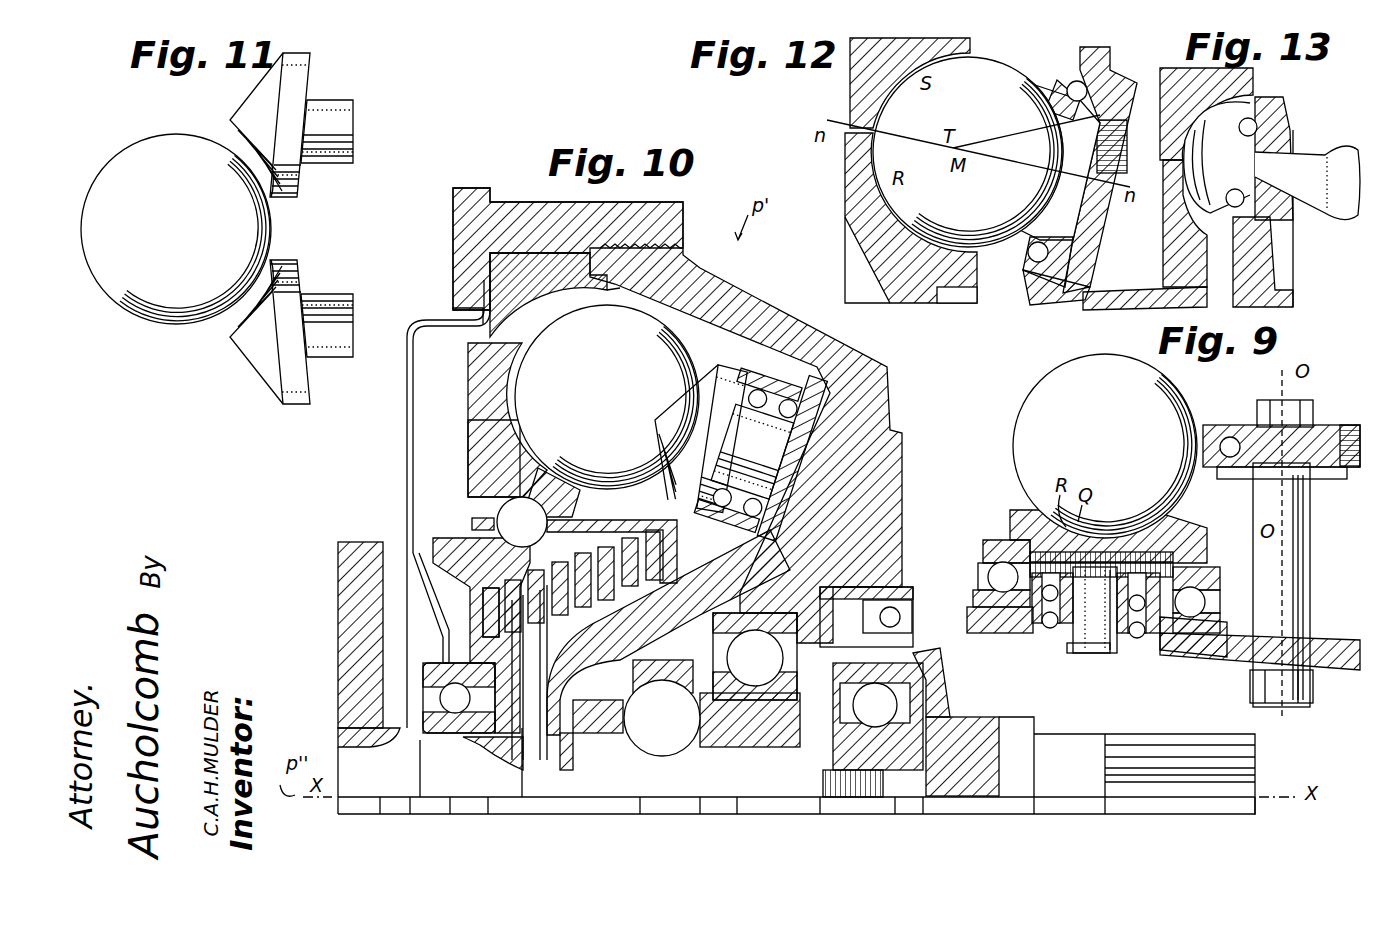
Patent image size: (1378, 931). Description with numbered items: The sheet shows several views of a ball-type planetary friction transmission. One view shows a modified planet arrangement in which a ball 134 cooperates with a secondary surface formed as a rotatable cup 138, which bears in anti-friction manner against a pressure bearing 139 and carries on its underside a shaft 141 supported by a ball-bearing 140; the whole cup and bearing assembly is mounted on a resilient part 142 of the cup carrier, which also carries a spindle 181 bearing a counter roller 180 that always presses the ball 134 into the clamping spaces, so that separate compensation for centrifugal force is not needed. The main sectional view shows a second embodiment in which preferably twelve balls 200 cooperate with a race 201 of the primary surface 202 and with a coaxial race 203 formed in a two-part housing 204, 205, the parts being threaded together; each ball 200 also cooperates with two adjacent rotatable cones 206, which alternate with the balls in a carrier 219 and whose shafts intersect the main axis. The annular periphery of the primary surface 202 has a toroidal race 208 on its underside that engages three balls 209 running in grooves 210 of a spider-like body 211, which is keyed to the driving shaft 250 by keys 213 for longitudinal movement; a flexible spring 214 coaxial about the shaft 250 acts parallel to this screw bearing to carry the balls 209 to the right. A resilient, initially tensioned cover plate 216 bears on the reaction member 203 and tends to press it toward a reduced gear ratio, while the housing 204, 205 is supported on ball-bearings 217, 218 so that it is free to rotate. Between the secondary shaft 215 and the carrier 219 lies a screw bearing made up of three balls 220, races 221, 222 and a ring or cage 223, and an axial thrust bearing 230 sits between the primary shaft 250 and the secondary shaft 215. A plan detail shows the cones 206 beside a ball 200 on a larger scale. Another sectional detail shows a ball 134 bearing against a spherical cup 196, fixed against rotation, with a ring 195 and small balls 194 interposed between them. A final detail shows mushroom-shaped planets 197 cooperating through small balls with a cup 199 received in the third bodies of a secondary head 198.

In FIG. 12, the ball 134 is at (993, 75).
In FIG. 9, the ball 134 is at (1033, 386).
In FIG. 9, the cup 138 is at (1013, 515).
In FIG. 9, the pressure bearing 139 is at (983, 548).
In FIG. 9, the ball-bearing 140 is at (1033, 638).
In FIG. 9, the shaft 141 is at (1125, 653).
In FIG. 9, the resilient part 142 is at (1335, 640).
In FIG. 9, the counter roller 180 is at (1322, 437).
In FIG. 9, the spindle 181 is at (1305, 558).
In FIG. 12, the small balls 194 is at (1105, 68).
In FIG. 12, the ring 195 is at (1068, 82).
In FIG. 12, the spherical cup 196 is at (1090, 258).
In FIG. 13, the planet 197 is at (1250, 103).
In FIG. 13, the secondary head 198 is at (1257, 283).
In FIG. 13, the cup 199 is at (1292, 130).
In FIG. 11, the ball 200 is at (128, 158).
In FIG. 10, the ball 200 is at (680, 345).
In FIG. 10, the race 201 is at (517, 408).
In FIG. 10, the primary surface 202 is at (480, 443).
In FIG. 10, the race 203 is at (562, 307).
In FIG. 10, the housing part 204 is at (457, 225).
In FIG. 10, the housing part 205 is at (758, 292).
In FIG. 11, the rotatable cone 206 is at (298, 90).
In FIG. 10, the rotatable cone 206 is at (672, 408).
In FIG. 10, the race 208 is at (530, 513).
In FIG. 10, the ball 209 is at (570, 505).
In FIG. 10, the groove 210 is at (483, 547).
In FIG. 10, the spiderlike body 211 is at (448, 550).
In FIG. 10, the key 213 is at (505, 740).
In FIG. 10, the flexible spring 214 is at (558, 565).
In FIG. 10, the secondary shaft 215 is at (982, 717).
In FIG. 10, the cover plate 216 is at (407, 407).
In FIG. 10, the ball-bearing 217 is at (420, 747).
In FIG. 10, the ball-bearing 218 is at (787, 610).
In FIG. 10, the carrier 219 is at (737, 557).
In FIG. 10, the ball 220 is at (657, 733).
In FIG. 10, the race 221 is at (603, 748).
In FIG. 10, the race 222 is at (727, 733).
In FIG. 10, the ring or cage 223 is at (690, 687).
In FIG. 10, the axial thrust bearing 230 is at (943, 666).
In FIG. 10, the driving shaft 250 is at (580, 787).